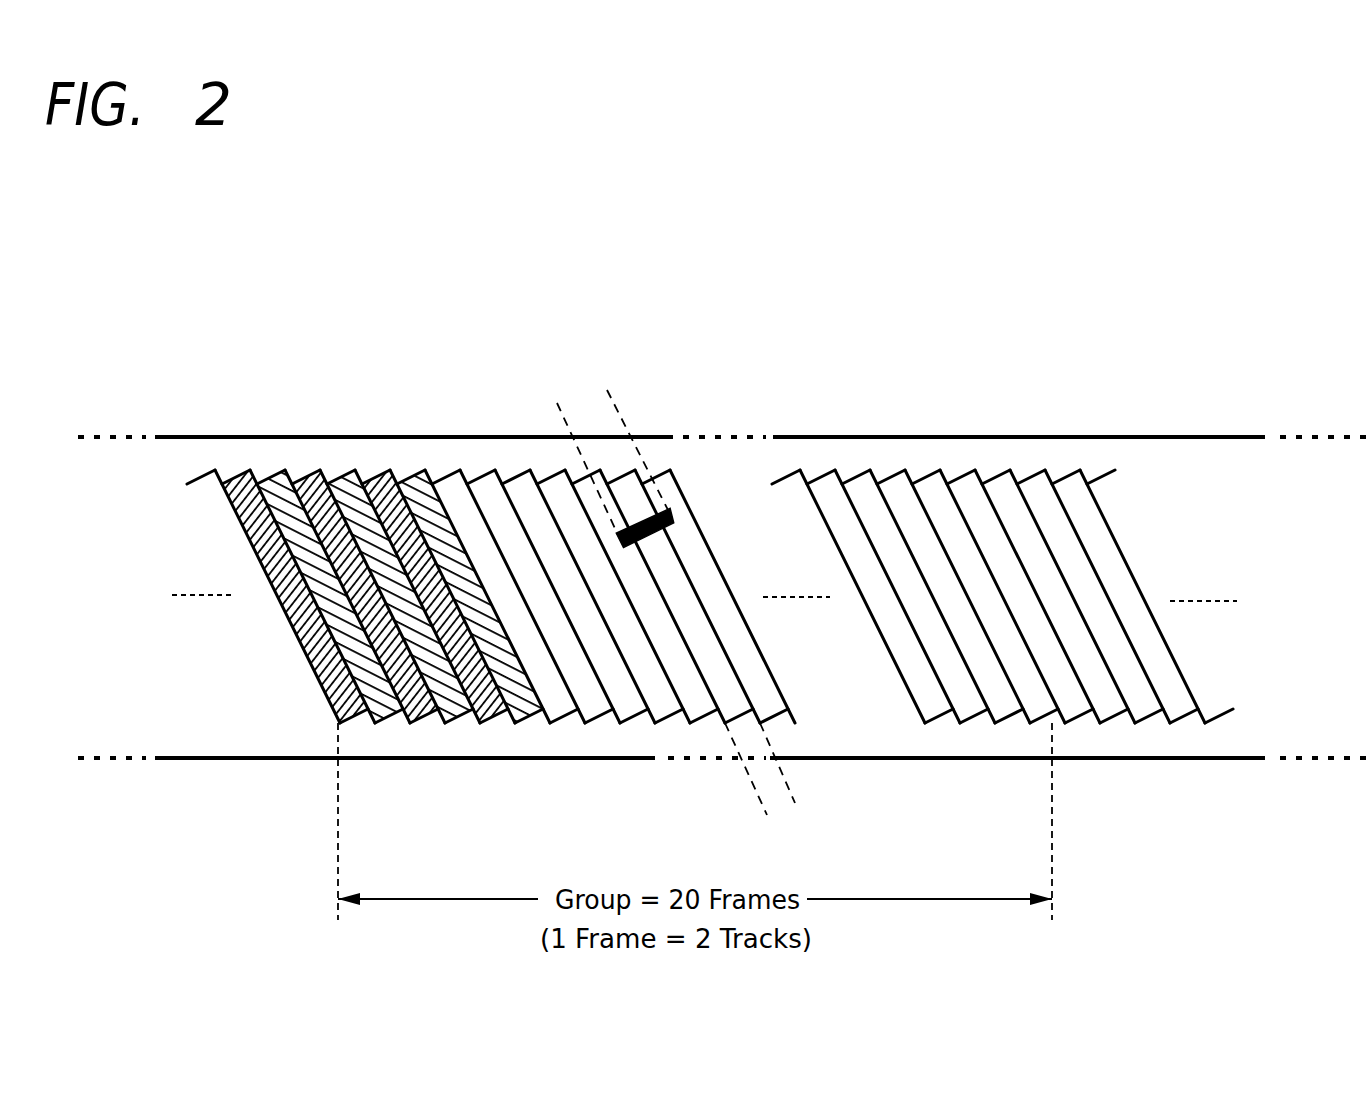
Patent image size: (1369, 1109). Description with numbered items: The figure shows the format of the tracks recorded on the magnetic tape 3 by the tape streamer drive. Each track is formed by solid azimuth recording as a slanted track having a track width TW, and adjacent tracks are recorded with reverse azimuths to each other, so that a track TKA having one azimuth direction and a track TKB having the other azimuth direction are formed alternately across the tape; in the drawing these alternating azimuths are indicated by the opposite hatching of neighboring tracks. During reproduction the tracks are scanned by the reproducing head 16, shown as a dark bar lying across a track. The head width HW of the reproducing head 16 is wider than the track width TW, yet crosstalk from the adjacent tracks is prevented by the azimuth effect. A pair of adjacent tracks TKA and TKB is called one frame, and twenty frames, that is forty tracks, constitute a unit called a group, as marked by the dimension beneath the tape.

The magnetic tape 3 is at (897, 437).
The reproducing head 16 is at (628, 520).
The track having one azimuth direction TKA is at (228, 480).
The track having the other azimuth direction TKB is at (270, 480).
The head width HW is at (608, 392).
The track width TW is at (727, 818).